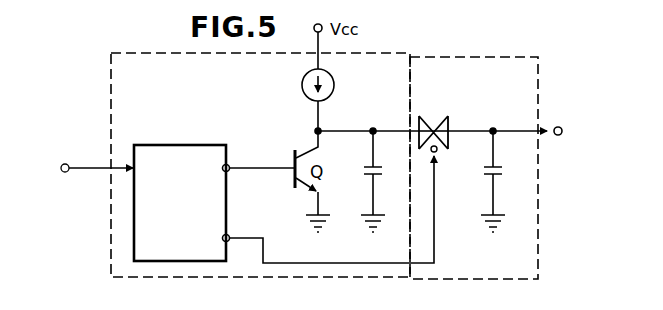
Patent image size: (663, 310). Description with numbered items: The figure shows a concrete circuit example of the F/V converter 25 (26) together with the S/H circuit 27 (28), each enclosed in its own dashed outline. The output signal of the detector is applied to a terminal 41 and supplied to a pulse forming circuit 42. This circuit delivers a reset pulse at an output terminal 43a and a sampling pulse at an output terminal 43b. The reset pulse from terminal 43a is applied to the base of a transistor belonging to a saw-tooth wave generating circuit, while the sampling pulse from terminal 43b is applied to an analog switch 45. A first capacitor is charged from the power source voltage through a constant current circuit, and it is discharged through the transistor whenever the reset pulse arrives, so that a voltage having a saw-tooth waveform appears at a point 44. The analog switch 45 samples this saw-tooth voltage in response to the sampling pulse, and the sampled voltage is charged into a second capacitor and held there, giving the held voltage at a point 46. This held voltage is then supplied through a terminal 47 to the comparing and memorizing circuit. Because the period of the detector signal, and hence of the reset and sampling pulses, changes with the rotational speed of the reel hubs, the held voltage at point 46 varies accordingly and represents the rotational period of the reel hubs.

The F/V converter 25 is at (260, 181).
The F/V converter 26 is at (162, 278).
The S/H circuit 27 is at (478, 143).
The S/H circuit 28 is at (423, 56).
The terminal 41 is at (65, 163).
The pulse forming circuit 42 is at (174, 145).
The output terminal 43a is at (229, 165).
The output terminal 43b is at (229, 235).
The point 44 is at (374, 130).
The analog switch 45 is at (434, 115).
The point 46 is at (493, 130).
The terminal 47 is at (564, 126).